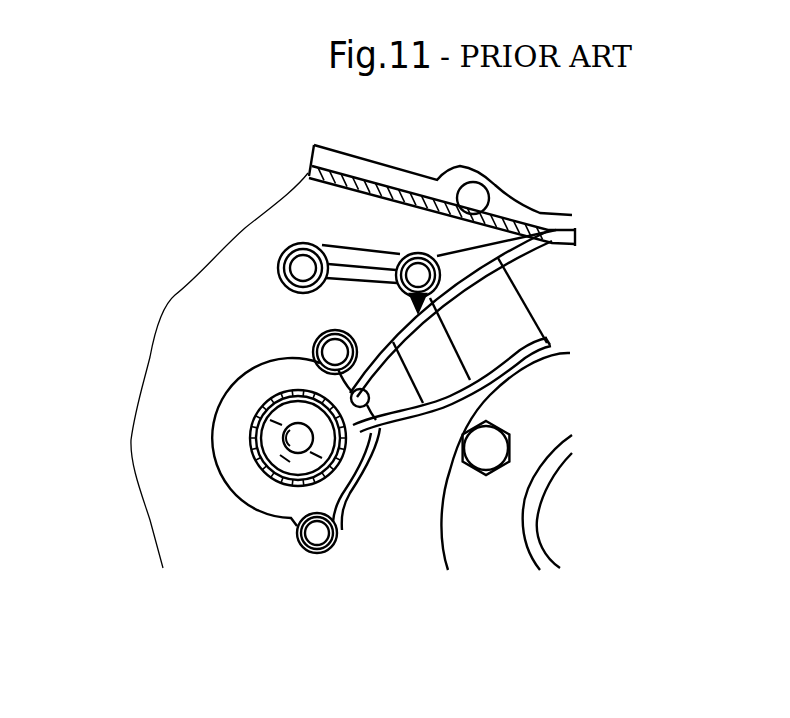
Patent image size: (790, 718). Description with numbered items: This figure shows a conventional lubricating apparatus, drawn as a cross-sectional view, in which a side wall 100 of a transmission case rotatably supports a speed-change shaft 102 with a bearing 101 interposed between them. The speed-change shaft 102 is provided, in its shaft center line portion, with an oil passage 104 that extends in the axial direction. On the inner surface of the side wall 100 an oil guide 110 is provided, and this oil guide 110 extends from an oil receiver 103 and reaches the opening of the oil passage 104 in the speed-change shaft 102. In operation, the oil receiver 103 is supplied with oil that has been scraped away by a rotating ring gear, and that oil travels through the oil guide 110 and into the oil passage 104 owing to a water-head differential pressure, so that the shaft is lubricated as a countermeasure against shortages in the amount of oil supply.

The side wall 100 is at (397, 522).
The bearing 101 is at (276, 470).
The speed-change shaft 102 is at (265, 456).
The oil receiver 103 is at (500, 316).
The oil passage 104 is at (293, 435).
The oil guide 110 is at (255, 378).